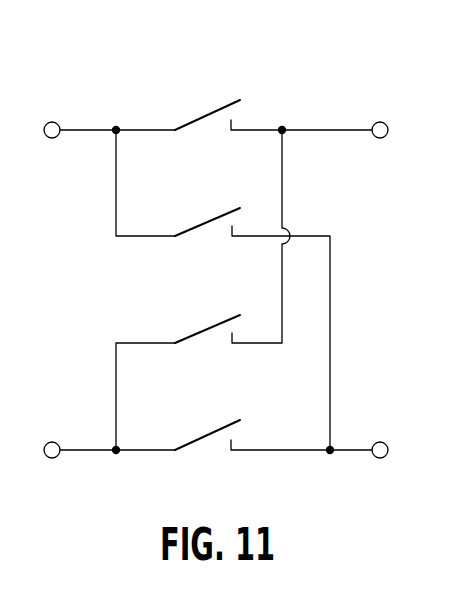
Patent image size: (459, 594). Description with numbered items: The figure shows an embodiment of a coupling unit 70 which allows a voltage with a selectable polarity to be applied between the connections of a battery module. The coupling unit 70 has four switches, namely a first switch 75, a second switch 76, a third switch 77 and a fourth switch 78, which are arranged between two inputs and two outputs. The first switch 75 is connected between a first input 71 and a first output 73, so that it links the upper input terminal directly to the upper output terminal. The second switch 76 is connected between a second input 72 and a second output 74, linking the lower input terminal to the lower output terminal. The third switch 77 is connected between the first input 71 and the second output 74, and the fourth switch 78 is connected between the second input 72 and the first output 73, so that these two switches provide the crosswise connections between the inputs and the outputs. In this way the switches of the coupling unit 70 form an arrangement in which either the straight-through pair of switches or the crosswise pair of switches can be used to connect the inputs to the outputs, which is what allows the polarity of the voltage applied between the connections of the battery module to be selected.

The coupling unit 70 is at (283, 97).
The first input 71 is at (53, 121).
The second input 72 is at (53, 441).
The first output 73 is at (380, 121).
The second output 74 is at (382, 441).
The first switch 75 is at (193, 118).
The second switch 76 is at (193, 440).
The third switch 77 is at (197, 226).
The fourth switch 78 is at (192, 334).